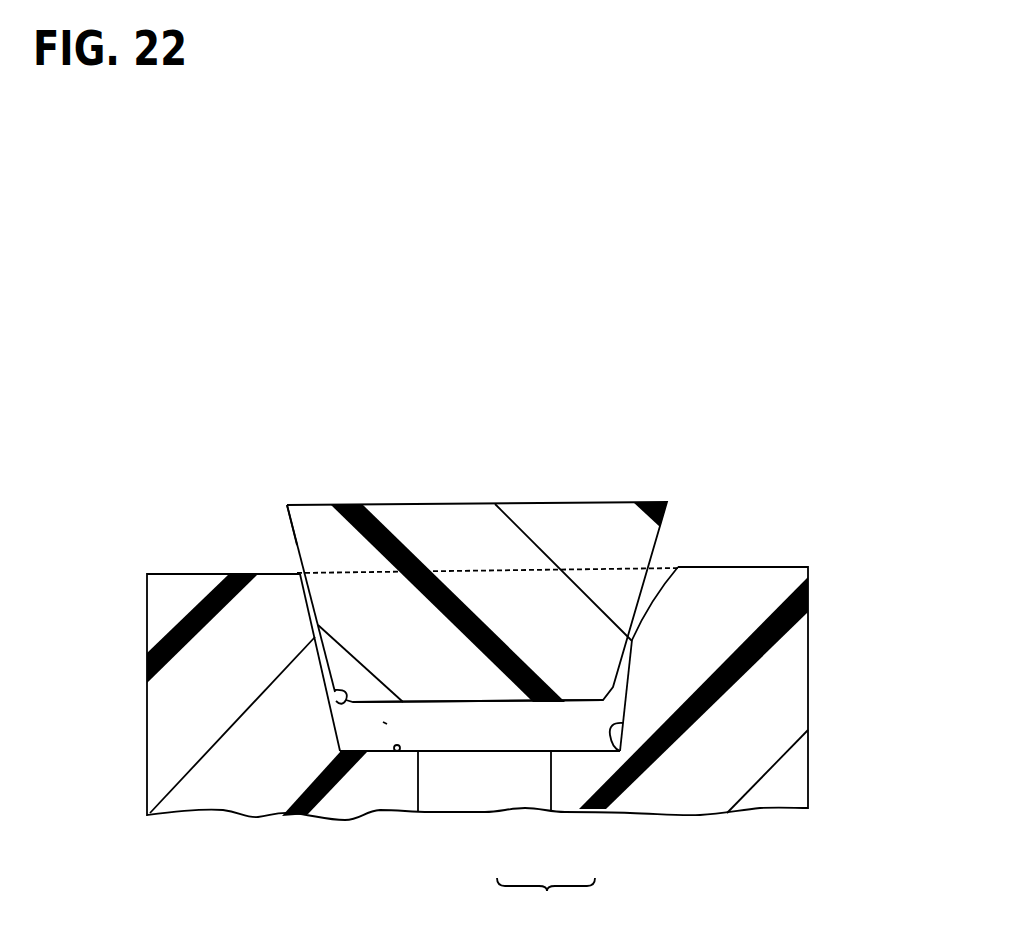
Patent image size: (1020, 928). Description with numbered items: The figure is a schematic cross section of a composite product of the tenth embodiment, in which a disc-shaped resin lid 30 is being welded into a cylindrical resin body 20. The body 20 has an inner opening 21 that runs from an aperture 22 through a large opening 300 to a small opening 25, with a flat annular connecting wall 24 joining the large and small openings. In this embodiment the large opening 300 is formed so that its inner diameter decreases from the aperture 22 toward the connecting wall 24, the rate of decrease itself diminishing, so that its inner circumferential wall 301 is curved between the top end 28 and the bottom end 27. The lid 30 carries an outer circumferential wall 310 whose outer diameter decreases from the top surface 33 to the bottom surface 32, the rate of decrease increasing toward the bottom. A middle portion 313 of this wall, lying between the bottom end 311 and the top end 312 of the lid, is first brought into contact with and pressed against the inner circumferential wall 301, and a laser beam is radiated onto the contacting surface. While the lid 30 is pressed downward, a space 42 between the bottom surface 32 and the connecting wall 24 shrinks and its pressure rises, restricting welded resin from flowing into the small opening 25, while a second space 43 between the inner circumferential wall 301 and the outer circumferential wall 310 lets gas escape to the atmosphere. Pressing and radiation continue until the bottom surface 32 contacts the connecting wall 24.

The body 20 is at (820, 684).
The inner opening 21 is at (546, 899).
The aperture 22 is at (367, 572).
The connecting wall 24 is at (397, 752).
The small opening 25 is at (528, 787).
The bottom end 27 is at (657, 750).
The top end 28 is at (660, 572).
The lid 30 is at (672, 527).
The bottom surface 32 is at (460, 703).
The top surface 33 is at (507, 503).
The space 42 is at (385, 723).
The second space 43 is at (300, 575).
The large opening 300 is at (577, 723).
The inner circumferential wall 301 is at (337, 703).
The outer circumferential wall 310 is at (617, 690).
The bottom end 311 is at (340, 751).
The top end 312 is at (287, 505).
The middle portion 313 is at (316, 627).